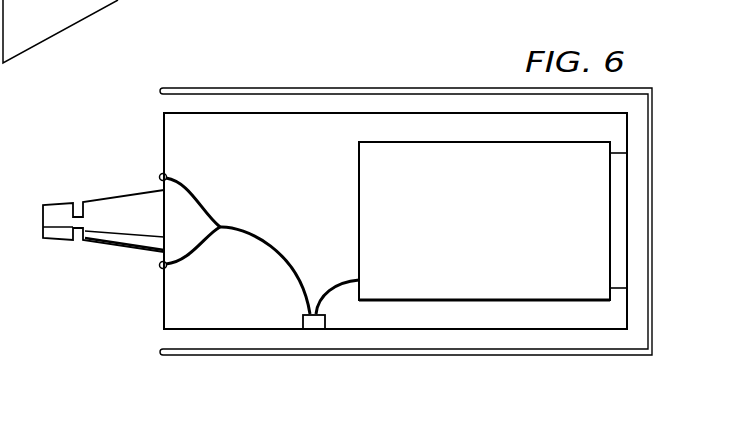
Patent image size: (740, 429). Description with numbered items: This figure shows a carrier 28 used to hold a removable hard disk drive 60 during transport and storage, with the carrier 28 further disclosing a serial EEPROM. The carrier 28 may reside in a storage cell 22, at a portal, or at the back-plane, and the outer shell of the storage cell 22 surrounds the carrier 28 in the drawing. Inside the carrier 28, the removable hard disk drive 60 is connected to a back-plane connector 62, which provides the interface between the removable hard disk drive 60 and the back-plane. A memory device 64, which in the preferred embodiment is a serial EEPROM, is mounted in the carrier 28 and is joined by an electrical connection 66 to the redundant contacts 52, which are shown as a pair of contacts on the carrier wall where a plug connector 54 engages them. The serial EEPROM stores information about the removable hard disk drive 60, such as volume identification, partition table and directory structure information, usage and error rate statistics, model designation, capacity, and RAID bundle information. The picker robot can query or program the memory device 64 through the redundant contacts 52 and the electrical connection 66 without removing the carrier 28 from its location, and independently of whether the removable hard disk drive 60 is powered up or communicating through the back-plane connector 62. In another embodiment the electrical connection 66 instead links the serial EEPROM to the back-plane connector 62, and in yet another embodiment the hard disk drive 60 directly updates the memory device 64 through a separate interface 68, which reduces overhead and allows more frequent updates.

The storage cell 22 is at (280, 83).
The carrier 28 is at (363, 112).
The redundant contacts 52 is at (159, 176).
The plug connector 54 is at (103, 204).
The removable hard disk drive 60 is at (473, 233).
The back-plane connector 62 is at (617, 190).
The memory device 64 is at (302, 322).
The electrical connection 66 is at (261, 233).
The separate interface 68 is at (342, 281).